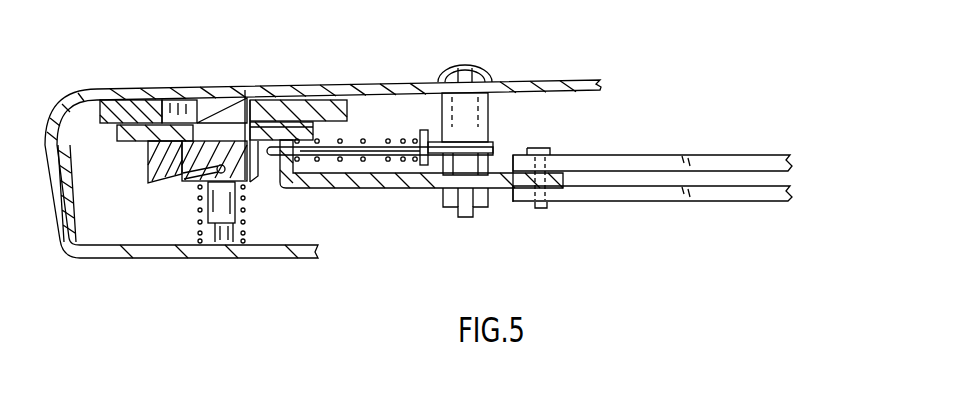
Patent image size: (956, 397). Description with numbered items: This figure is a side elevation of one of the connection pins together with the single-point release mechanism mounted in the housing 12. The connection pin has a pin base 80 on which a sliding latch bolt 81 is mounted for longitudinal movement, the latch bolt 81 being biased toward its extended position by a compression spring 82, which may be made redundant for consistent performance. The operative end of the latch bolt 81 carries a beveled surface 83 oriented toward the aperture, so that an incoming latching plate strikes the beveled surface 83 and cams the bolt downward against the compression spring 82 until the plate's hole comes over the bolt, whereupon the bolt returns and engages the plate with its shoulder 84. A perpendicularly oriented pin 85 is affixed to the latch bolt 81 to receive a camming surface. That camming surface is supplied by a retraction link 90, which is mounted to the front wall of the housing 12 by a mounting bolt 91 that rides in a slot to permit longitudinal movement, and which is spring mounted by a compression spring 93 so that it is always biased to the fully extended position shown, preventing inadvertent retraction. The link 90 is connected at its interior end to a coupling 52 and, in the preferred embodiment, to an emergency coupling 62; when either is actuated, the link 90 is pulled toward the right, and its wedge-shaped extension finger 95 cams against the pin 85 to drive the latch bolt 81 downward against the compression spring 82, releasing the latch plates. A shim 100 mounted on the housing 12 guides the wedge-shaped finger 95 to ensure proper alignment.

The housing 12 is at (98, 89).
The shim 100 is at (124, 104).
The beveled surface 83 is at (215, 100).
The latch bolt 81 is at (246, 99).
The shoulder 84 is at (256, 113).
The extension finger 95 is at (147, 168).
The pin 85 is at (197, 183).
The pin base 80 is at (228, 243).
The compression spring 82 is at (197, 228).
The retraction link 90 is at (372, 188).
The compression spring 93 is at (368, 143).
The mounting bolt 91 is at (490, 117).
The coupling 52 is at (640, 158).
The emergency coupling 62 is at (668, 190).